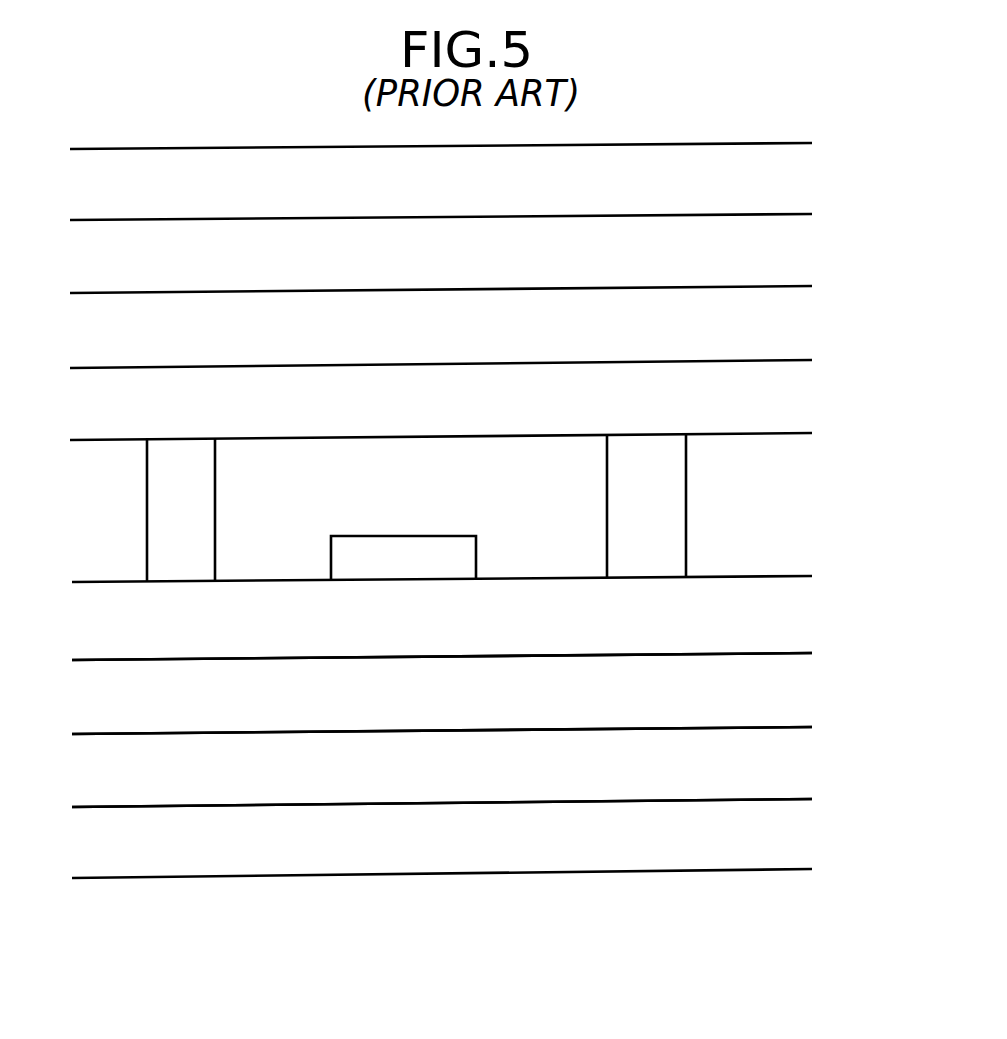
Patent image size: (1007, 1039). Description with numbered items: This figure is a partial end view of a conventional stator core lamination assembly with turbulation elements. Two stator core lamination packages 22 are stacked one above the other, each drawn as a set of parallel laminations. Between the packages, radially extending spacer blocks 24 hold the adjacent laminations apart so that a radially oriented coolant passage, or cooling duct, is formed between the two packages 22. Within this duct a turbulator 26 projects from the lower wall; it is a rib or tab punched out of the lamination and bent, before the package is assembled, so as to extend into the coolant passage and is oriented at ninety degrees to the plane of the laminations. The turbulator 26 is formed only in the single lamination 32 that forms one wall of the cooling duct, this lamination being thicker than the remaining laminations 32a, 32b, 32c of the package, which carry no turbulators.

The stator core lamination package 22 is at (833, 135).
The spacer block 24 is at (168, 509).
The turbulator 26 is at (432, 542).
The lamination 32 is at (757, 629).
The lamination 32a is at (768, 710).
The lamination 32b is at (790, 783).
The lamination 32c is at (775, 857).